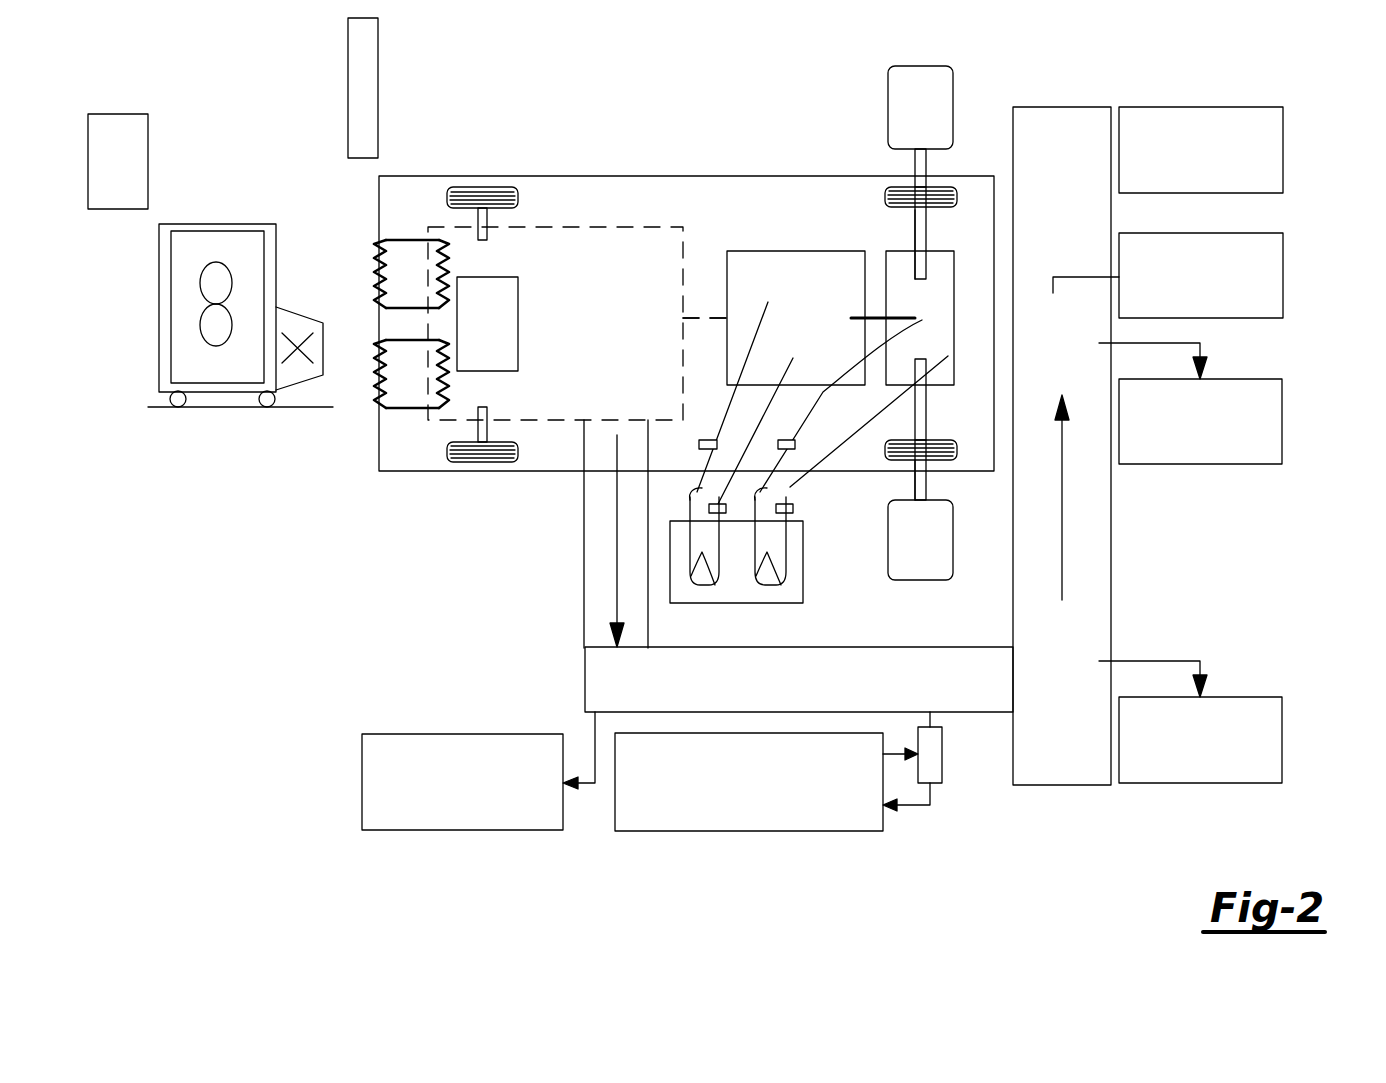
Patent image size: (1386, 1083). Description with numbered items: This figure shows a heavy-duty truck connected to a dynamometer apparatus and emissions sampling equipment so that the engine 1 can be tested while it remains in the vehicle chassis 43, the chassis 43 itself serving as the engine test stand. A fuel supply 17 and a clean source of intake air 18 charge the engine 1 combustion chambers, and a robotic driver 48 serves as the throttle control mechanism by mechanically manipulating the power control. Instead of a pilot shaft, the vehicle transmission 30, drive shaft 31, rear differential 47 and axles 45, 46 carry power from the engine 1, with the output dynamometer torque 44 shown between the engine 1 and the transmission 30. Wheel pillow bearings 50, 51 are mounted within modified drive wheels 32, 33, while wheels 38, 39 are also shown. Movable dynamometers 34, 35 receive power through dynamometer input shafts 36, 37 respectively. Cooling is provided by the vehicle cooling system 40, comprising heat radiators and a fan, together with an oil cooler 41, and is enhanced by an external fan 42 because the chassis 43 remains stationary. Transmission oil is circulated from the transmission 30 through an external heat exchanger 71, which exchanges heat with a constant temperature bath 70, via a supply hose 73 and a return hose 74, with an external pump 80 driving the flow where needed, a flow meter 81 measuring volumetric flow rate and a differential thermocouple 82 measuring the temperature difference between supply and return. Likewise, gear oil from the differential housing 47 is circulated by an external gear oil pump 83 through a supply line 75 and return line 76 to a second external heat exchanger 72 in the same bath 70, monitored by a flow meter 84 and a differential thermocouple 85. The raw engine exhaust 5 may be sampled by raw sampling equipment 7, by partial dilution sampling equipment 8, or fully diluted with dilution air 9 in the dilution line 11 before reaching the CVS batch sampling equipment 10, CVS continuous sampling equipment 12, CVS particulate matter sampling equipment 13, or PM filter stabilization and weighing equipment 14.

The engine 1 is at (596, 226).
The raw engine exhaust 5 is at (601, 521).
The raw sampling equipment 7 is at (463, 832).
The partial dilution sampling equipment 8 is at (750, 832).
The dilution air 9 is at (1037, 751).
The CVS batch sampling equipment 10 is at (1255, 697).
The dilution line 11 is at (1060, 107).
The CVS continuous sampling equipment 12 is at (1200, 466).
The CVS particulate matter sampling equipment 13 is at (1283, 278).
The PM filter stabilization and weighing equipment 14 is at (1283, 148).
The fuel supply 17 is at (148, 161).
The clean source of intake air 18 is at (379, 88).
The vehicle transmission 30 is at (775, 251).
The drive shaft 31 is at (856, 318).
The modified drive wheel 32 is at (957, 448).
The modified drive wheel 33 is at (885, 197).
The dynamometer 34 is at (953, 540).
The dynamometer 35 is at (888, 110).
The dynamometer input shaft 36 is at (926, 487).
The dynamometer input shaft 37 is at (926, 160).
The wheel 38 is at (447, 451).
The wheel 39 is at (447, 197).
The vehicle cooling system 40 is at (379, 240).
The oil cooler 41 is at (379, 408).
The external fan 42 is at (200, 333).
The vehicle chassis 43 is at (667, 176).
The output dynamometer torque 44 is at (716, 318).
The axle 45 is at (915, 229).
The axle 46 is at (915, 417).
The rear differential 47 is at (937, 258).
The robotic driver 48 is at (518, 323).
The wheel pillow bearing 50 is at (927, 440).
The wheel pillow bearing 51 is at (915, 187).
The constant temperature bath 70 is at (803, 583).
The external heat exchanger 71 is at (716, 588).
The external heat exchanger 72 is at (781, 588).
The supply hose 73 is at (720, 422).
The return hose 74 is at (745, 447).
The supply line 75 is at (826, 396).
The return line 76 is at (826, 462).
The external pump 80 is at (726, 500).
The flow meter 81 is at (699, 445).
The differential thermocouple 82 is at (701, 489).
The external gear oil pump 83 is at (793, 510).
The flow meter 84 is at (788, 438).
The differential thermocouple 85 is at (777, 489).